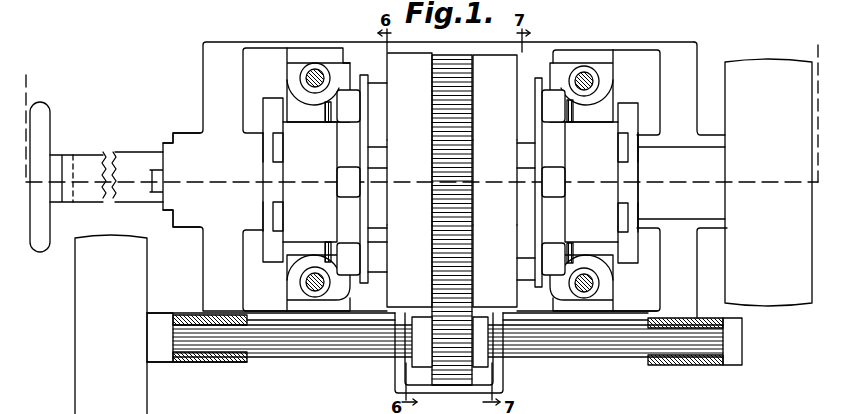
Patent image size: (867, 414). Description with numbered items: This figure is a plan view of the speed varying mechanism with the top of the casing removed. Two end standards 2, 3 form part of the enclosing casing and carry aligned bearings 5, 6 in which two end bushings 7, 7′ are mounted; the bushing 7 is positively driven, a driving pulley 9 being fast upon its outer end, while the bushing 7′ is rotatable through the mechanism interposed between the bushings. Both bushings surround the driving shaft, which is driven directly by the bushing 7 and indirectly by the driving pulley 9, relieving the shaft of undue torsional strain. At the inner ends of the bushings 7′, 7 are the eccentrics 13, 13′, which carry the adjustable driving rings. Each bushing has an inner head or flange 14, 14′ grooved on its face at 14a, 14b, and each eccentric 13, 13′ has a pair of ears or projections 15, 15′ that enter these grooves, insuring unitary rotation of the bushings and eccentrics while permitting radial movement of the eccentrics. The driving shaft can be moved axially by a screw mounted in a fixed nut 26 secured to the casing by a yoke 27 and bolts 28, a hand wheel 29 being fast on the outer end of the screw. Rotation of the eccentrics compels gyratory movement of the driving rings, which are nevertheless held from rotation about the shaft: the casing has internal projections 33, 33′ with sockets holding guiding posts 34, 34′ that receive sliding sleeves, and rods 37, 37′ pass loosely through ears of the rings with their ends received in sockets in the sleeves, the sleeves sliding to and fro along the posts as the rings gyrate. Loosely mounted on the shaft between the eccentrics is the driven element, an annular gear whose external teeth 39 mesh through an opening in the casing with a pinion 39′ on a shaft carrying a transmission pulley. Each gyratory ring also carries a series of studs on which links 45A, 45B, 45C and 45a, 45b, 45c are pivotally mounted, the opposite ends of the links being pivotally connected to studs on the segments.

The end standard 2 is at (704, 283).
The end standard 3 is at (200, 271).
The bearing 5 is at (707, 141).
The bearing 6 is at (187, 134).
The end bushing 7 is at (688, 207).
The end bushing 7′ is at (243, 150).
The driving pulley 9 is at (768, 62).
The eccentric 13 is at (578, 135).
The eccentric 13′ is at (303, 125).
The inner head or flange 14 is at (628, 170).
The inner head or flange 14′ is at (272, 174).
The groove 14a is at (628, 152).
The groove 14b is at (278, 147).
The ear or projection 15 is at (623, 142).
The ear or projection 15′ is at (283, 145).
The fixed nut 26 is at (68, 157).
The yoke 27 is at (100, 157).
The bolts 28 is at (152, 153).
The hand wheel 29 is at (42, 110).
The internal projection 33 is at (607, 63).
The internal projection 33′ is at (293, 60).
The guiding post 34 is at (586, 72).
The guiding post 34′ is at (315, 69).
The rod 37 is at (568, 243).
The rod 37′ is at (328, 243).
The external teeth 39 is at (455, 62).
The pinion 39′ is at (462, 358).
The link 45a is at (383, 200).
The link 45b is at (373, 118).
The link 45c is at (377, 260).
The link 45A is at (528, 210).
The link 45B is at (528, 280).
The link 45C is at (522, 118).